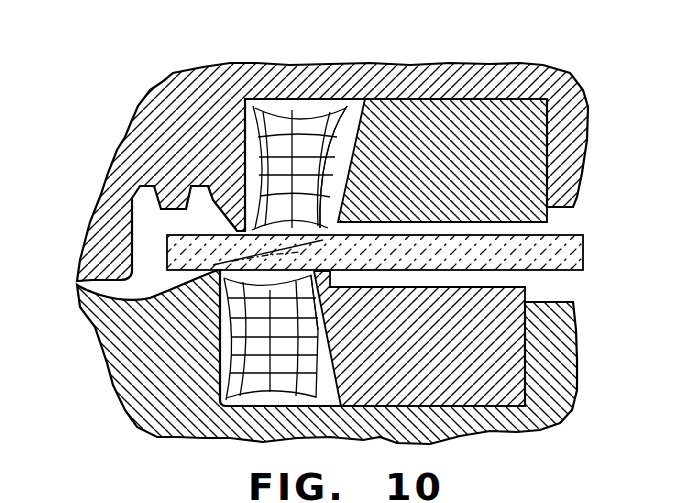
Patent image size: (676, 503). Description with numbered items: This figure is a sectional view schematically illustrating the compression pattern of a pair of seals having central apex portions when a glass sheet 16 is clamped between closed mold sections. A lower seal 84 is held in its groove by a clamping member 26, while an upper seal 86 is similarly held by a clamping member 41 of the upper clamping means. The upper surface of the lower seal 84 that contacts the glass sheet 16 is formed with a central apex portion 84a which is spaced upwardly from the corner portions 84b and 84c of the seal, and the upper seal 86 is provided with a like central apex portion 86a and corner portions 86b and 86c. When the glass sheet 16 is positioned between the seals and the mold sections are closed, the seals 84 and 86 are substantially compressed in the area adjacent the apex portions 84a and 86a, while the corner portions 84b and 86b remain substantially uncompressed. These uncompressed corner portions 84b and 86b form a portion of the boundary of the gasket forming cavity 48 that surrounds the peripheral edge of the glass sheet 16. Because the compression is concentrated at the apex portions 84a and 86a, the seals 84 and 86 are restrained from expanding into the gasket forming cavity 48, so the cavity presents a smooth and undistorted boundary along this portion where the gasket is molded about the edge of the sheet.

The glass sheet 16 is at (581, 247).
The clamping member 26 is at (518, 345).
The clamping member 41 is at (540, 160).
The gasket forming cavity 48 is at (143, 239).
The seal 84 is at (245, 398).
The central apex portion 84a is at (265, 250).
The corner portion 84b is at (188, 300).
The corner portion 84c is at (313, 277).
The upper seal 86 is at (305, 107).
The central apex portion 86a is at (300, 252).
The corner portion 86b is at (200, 203).
The corner portion 86c is at (372, 167).